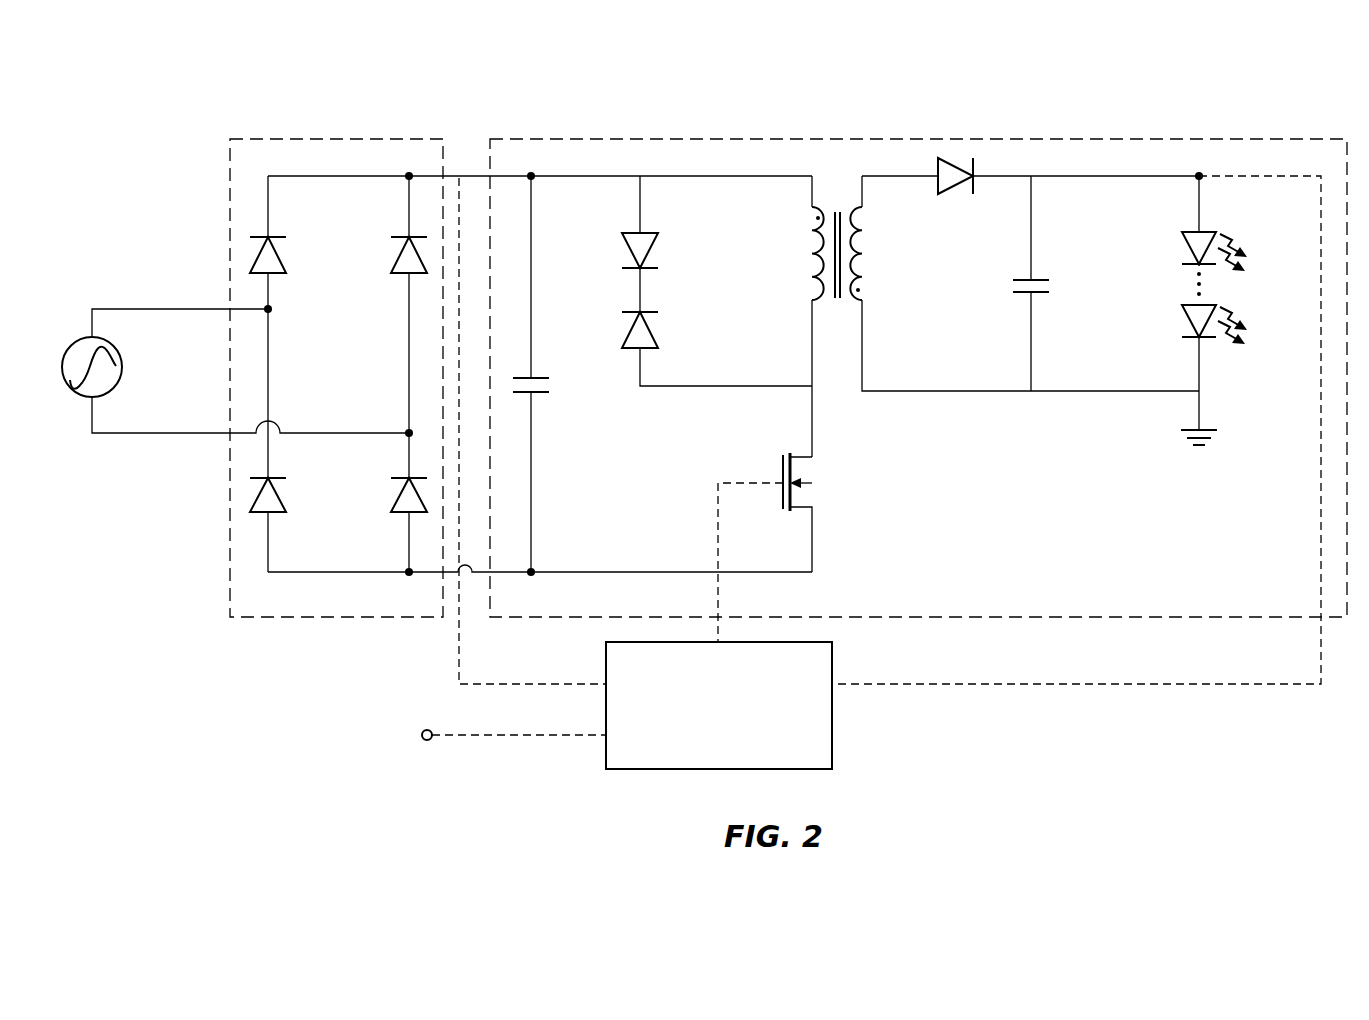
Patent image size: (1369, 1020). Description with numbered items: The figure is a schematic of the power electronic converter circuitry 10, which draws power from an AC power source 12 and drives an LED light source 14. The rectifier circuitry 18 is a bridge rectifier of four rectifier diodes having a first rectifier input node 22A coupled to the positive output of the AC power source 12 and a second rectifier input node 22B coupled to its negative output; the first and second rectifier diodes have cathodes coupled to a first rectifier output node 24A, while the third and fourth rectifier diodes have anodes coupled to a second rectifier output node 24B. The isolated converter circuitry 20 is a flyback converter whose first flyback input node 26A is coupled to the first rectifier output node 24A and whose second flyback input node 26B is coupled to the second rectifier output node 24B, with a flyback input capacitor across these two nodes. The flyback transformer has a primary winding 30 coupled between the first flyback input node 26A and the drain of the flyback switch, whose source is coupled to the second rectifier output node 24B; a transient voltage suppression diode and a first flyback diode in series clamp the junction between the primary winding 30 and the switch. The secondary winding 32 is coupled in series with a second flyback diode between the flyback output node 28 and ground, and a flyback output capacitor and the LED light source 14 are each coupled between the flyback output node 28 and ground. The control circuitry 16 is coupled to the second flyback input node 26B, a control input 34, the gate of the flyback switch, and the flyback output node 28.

The power electronic converter circuitry 10 is at (962, 69).
The AC power source 12 is at (117, 350).
The LED light source 14 is at (1250, 288).
The control circuitry 16 is at (890, 472).
The rectifier circuitry 18 is at (521, 378).
The isolated converter circuitry 20 is at (918, 390).
The first rectifier input node 22A is at (268, 309).
The second rectifier input node 22B is at (409, 433).
The first rectifier output node 24A is at (409, 176).
The second rectifier output node 24B is at (409, 572).
The first flyback input node 26A is at (531, 176).
The second flyback input node 26B is at (531, 572).
The flyback output node 28 is at (1199, 176).
The primary winding 30 is at (808, 260).
The secondary winding 32 is at (870, 255).
The control input 34 is at (421, 733).